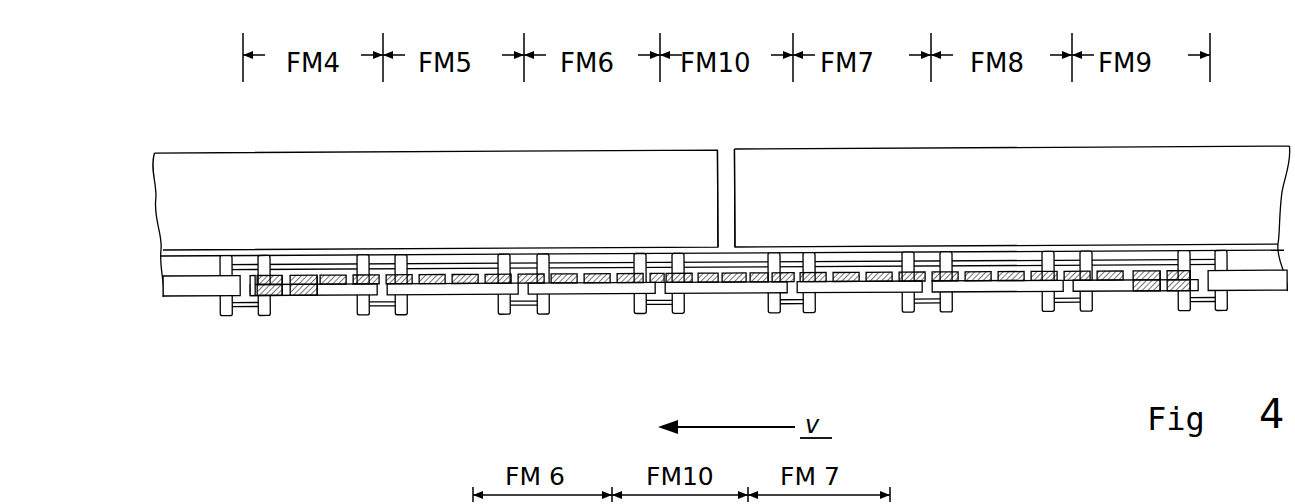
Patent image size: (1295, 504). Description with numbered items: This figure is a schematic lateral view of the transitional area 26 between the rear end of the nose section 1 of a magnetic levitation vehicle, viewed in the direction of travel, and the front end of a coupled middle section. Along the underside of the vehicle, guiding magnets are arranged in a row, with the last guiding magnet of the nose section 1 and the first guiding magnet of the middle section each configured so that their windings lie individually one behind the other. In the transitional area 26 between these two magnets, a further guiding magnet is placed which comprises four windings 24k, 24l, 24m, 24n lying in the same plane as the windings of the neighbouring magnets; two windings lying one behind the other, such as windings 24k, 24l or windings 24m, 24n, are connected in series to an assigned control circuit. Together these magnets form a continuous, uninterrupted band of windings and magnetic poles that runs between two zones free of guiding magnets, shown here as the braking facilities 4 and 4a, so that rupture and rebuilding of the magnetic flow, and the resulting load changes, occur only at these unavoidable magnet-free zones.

The nose section 1 is at (203, 142).
The braking facility 4 is at (177, 285).
The braking facility 4a is at (1253, 277).
The transitional area 26 is at (723, 146).
The winding 24k is at (670, 283).
The winding 24l is at (716, 283).
The winding 24m is at (745, 283).
The winding 24n is at (768, 270).